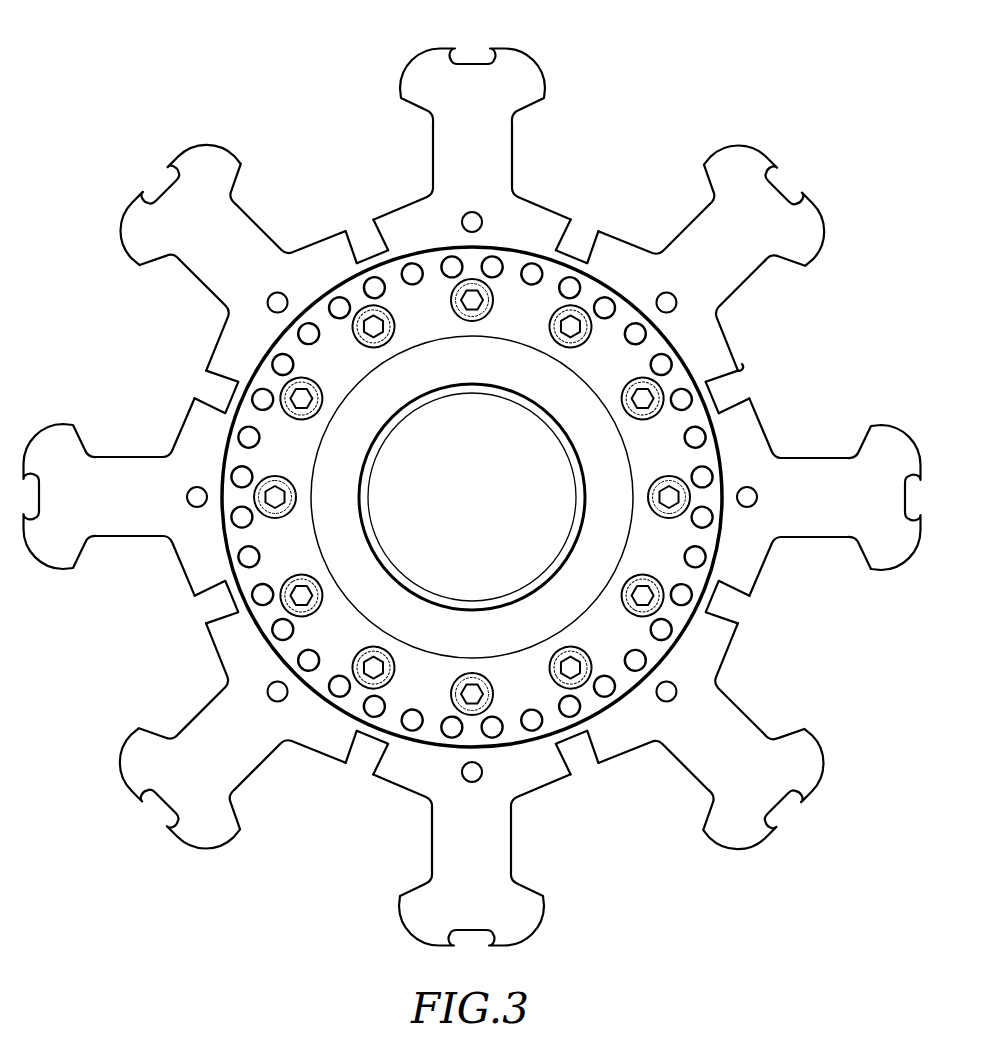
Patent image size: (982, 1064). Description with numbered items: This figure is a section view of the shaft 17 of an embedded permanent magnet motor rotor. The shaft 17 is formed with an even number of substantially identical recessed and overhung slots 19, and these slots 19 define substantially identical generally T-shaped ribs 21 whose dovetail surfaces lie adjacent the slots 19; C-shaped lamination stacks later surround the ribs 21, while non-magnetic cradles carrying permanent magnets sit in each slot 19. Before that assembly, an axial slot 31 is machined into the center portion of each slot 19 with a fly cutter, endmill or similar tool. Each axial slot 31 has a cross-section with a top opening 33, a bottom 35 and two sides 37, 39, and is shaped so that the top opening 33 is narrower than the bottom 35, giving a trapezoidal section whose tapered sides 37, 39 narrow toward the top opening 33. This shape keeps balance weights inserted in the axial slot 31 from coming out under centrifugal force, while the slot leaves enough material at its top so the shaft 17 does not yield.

The shaft 17 is at (162, 124).
The slot 19 is at (330, 234).
The T-shaped rib 21 is at (518, 58).
The axial slot 31 is at (363, 200).
The top opening 33 is at (745, 388).
The bottom 35 is at (716, 380).
The side 37 is at (745, 374).
The side 39 is at (740, 405).